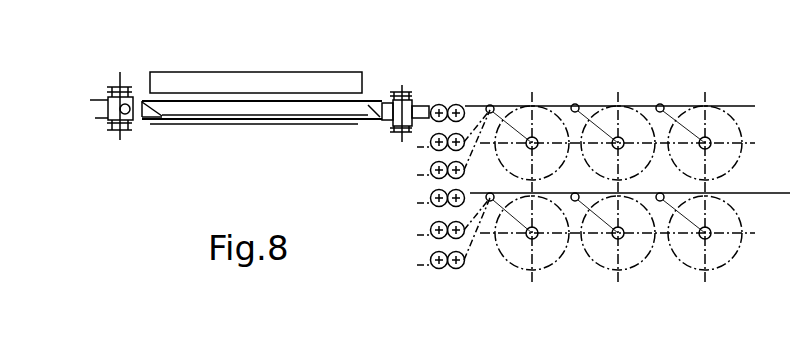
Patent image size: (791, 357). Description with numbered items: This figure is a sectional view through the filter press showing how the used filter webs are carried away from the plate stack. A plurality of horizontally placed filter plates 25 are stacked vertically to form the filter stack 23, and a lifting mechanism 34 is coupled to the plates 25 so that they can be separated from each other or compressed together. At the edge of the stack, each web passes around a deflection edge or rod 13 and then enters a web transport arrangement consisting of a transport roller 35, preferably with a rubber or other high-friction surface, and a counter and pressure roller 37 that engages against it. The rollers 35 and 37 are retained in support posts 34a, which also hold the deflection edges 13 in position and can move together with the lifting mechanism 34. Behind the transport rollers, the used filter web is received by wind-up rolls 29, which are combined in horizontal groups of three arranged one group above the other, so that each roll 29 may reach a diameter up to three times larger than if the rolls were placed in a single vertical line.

The lifting mechanism 34 is at (120, 95).
The vertical filter stack 23 is at (287, 66).
The filter plates 25 is at (322, 83).
The deflection edge or rod 13 is at (146, 116).
The support posts 34a is at (400, 89).
The transport roller 35 is at (442, 103).
The counter and pressure roller 37 is at (458, 104).
The wind-up rolls 29 is at (550, 112).